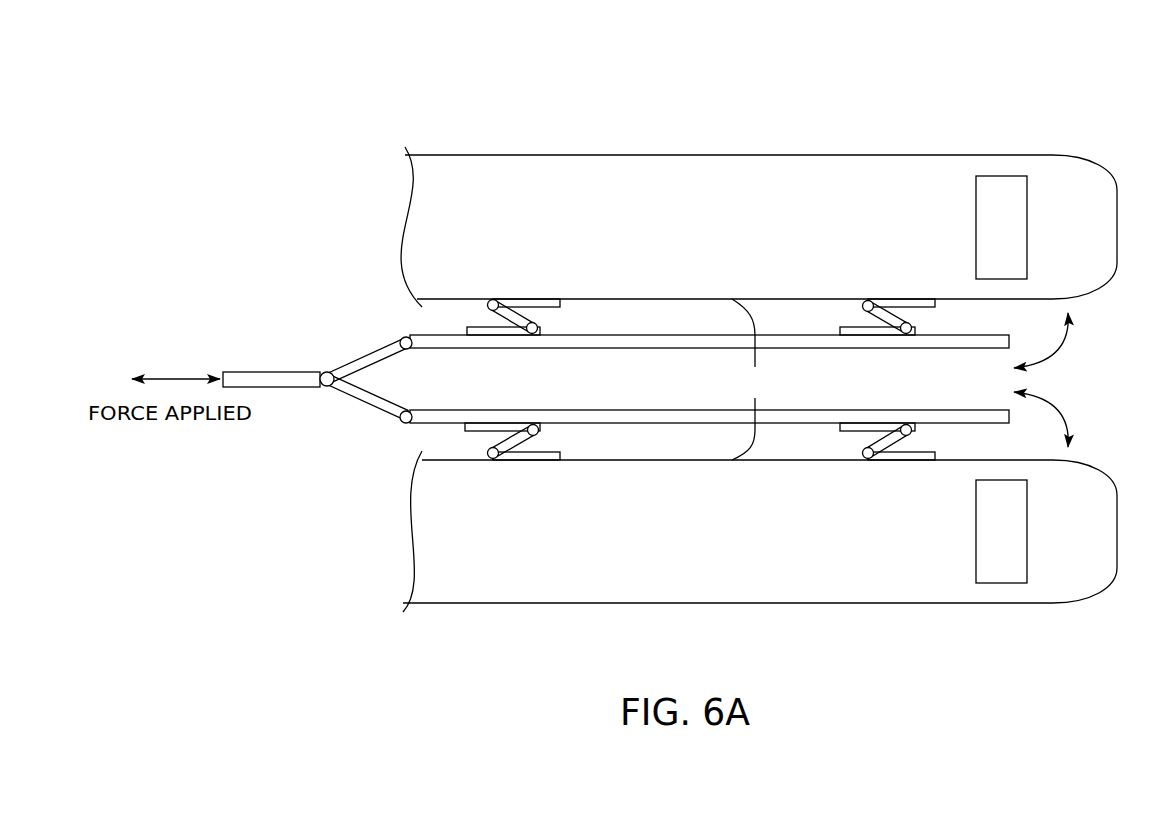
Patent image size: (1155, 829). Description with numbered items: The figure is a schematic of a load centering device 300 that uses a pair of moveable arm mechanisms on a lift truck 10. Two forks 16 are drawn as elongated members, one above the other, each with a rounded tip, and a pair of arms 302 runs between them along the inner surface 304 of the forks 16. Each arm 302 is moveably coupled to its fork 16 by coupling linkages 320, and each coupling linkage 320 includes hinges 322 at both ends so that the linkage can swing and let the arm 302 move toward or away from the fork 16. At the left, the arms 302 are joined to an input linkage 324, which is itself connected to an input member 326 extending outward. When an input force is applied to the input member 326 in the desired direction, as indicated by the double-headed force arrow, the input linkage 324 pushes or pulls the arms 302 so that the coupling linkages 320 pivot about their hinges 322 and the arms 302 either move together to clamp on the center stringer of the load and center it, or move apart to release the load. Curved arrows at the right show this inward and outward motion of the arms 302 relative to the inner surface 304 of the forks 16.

The vehicle / system 10 is at (308, 82).
The forks 16 is at (1063, 140).
The load centering device 300 is at (360, 160).
The arms 302 is at (695, 328).
The inner surface 304 is at (754, 379).
The coupling linkage 320 is at (537, 289).
The hinges 322 is at (487, 307).
The input linkage 324 is at (357, 432).
The input member 326 is at (273, 370).